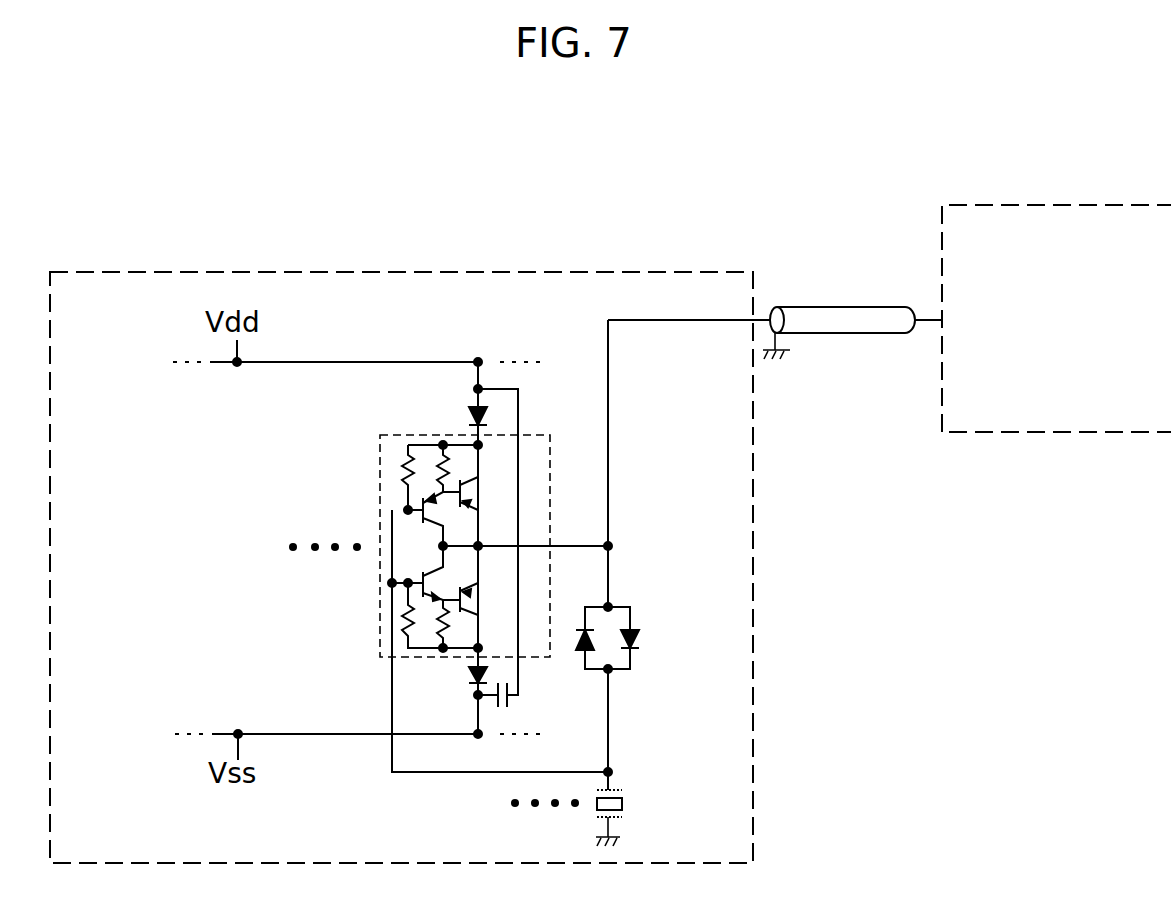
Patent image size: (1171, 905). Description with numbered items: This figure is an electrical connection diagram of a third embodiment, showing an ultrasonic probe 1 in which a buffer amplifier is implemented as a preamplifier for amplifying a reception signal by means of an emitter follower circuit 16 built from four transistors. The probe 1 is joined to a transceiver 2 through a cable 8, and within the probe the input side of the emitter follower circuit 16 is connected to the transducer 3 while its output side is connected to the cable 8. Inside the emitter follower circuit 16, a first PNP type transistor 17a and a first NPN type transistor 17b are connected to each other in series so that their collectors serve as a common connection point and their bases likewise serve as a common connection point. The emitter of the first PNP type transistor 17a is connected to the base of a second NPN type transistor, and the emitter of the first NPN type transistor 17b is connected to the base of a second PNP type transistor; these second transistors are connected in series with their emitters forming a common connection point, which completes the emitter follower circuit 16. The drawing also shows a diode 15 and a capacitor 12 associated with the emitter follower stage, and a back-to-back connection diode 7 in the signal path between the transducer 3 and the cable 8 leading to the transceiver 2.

The ultrasonic probe 1 is at (280, 271).
The transceiver 2 is at (1020, 205).
The transducer 3 is at (622, 803).
The back-to-back connection diode 7 is at (612, 622).
The cable 8 is at (820, 307).
The capacitor 12 is at (510, 700).
The diode 15 is at (492, 418).
The emitter follower circuit 16 is at (380, 478).
The first PNP type transistor 17a is at (475, 490).
The first NPN type transistor 17b is at (475, 600).